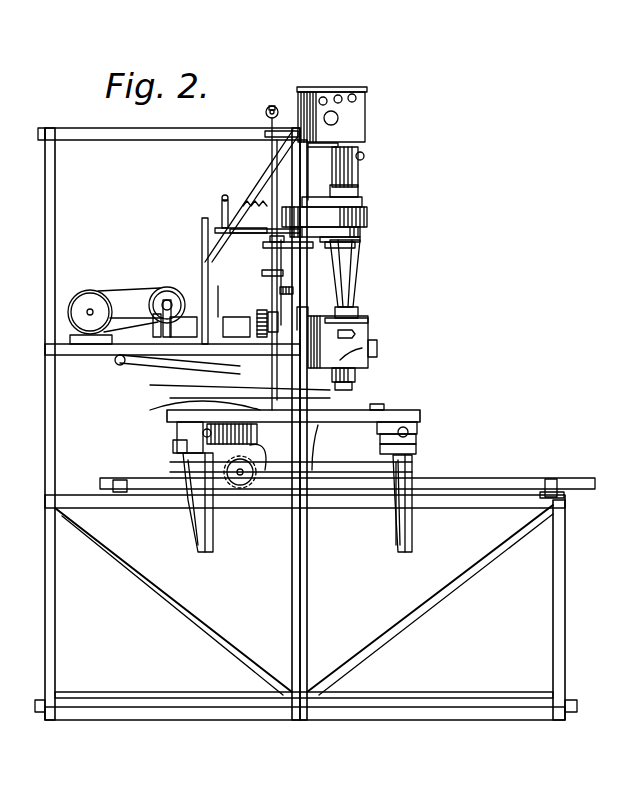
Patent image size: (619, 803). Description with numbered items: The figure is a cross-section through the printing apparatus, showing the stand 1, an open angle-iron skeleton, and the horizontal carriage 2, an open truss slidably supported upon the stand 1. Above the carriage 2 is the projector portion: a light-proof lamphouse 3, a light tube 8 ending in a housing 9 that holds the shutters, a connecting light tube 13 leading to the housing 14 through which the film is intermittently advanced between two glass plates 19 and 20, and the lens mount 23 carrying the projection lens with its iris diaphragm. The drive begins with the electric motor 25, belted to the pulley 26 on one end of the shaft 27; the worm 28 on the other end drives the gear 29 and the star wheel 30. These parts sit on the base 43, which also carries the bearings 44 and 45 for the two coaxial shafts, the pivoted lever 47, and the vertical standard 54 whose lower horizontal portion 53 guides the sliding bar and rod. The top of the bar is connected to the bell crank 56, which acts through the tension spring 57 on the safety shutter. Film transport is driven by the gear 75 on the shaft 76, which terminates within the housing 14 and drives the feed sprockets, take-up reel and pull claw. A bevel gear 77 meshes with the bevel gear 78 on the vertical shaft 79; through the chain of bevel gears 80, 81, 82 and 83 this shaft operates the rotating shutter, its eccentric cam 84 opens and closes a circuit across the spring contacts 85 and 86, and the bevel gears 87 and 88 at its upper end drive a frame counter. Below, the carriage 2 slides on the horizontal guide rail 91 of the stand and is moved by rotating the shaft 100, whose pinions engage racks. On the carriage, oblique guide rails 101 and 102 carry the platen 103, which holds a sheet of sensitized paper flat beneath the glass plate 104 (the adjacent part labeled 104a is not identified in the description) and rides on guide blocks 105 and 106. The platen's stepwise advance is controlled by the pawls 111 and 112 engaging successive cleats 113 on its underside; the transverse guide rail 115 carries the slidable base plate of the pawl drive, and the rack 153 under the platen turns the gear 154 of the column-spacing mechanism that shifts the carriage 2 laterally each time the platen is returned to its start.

The stand 1 is at (566, 545).
The horizontal carriage 2 is at (200, 525).
The lamphouse 3 is at (362, 113).
The light tube 8 is at (365, 165).
The housing 9 is at (368, 215).
The connecting light tube 13 is at (360, 265).
The housing 14 is at (370, 318).
The glass plate 19 is at (355, 335).
The glass plate 20 is at (362, 348).
The lens mount 23 is at (356, 378).
The electric motor 25 is at (80, 292).
The pulley 26 is at (158, 288).
The shaft 27 is at (160, 292).
The worm 28 is at (162, 303).
The gear 29 is at (158, 322).
The star wheel 30 is at (200, 386).
The base 43 is at (100, 356).
The bearing 44 is at (220, 300).
The bearing 45 is at (160, 312).
The pivoted lever 47 is at (118, 365).
The horizontal portion of standard 53 is at (210, 312).
The vertical standard 54 is at (202, 222).
The bell crank 56 is at (222, 200).
The tension spring 57 is at (240, 198).
The gear 75 is at (205, 398).
The shaft 76 is at (370, 358).
The bevel gear 77 is at (257, 314).
The bevel gear 78 is at (268, 314).
The vertical shaft 79 is at (262, 272).
The bevel gear 80 is at (265, 222).
The bevel gear 81 is at (280, 215).
The bevel gear 82 is at (356, 250).
The bevel gear 83 is at (362, 240).
The eccentric cam 84 is at (268, 244).
The spring contact 85 is at (285, 280).
The spring contact 86 is at (294, 291).
The bevel gear 87 is at (265, 112).
The bevel gear 88 is at (274, 105).
The horizontal guide rail 91 is at (512, 478).
The shaft 100 is at (240, 486).
The horizontal guide rail 101 is at (410, 433).
The horizontal guide rail 102 is at (175, 448).
The platen 103 is at (412, 423).
The glass plate 104 is at (410, 410).
The gear 104a is at (262, 410).
The guide block 105 is at (416, 447).
The guide block 106 is at (178, 428).
The pawl 111 is at (314, 475).
The pawl 112 is at (350, 425).
The cleats 113 is at (382, 408).
The transverse guide rail 115 is at (395, 485).
The rack 153 is at (200, 414).
The gear 154 is at (265, 472).